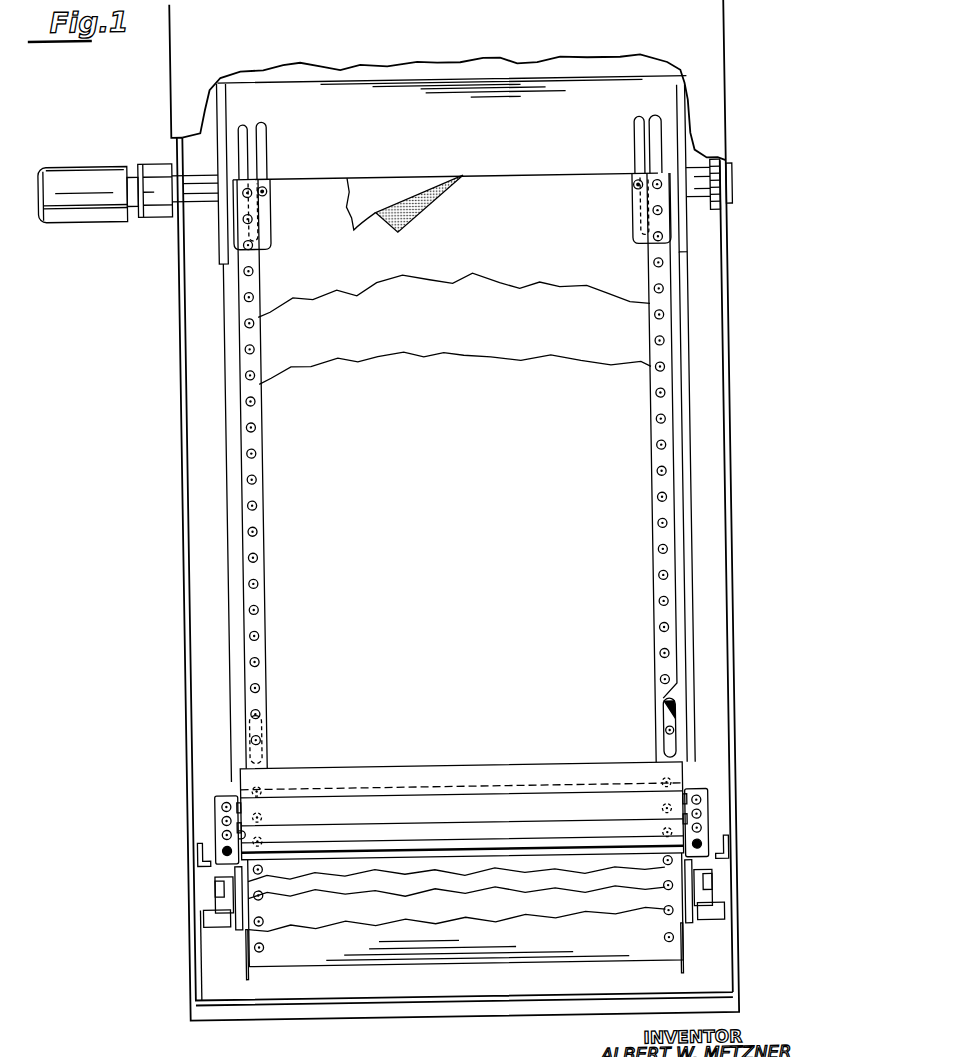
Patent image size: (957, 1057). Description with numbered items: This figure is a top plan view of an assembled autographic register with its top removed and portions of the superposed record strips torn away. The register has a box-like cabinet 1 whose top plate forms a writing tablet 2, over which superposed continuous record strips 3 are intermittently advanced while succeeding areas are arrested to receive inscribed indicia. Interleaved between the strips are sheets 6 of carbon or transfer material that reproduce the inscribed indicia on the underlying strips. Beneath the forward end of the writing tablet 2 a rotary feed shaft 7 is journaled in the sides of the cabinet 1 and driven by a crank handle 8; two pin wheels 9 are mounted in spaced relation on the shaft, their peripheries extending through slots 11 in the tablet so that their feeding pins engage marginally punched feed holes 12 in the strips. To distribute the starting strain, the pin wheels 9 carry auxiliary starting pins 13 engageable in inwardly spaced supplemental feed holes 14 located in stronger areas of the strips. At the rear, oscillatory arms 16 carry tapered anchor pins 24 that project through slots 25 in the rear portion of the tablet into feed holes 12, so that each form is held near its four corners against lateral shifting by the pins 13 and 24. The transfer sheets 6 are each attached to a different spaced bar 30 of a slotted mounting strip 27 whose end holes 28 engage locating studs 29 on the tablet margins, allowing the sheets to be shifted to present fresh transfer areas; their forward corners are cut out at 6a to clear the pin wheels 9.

The box-like cabinet 1 is at (203, 498).
The writing tablet 2 is at (228, 564).
The record strips 3 is at (242, 611).
The sheets of carbon or transfer material 6 is at (412, 212).
The cut-out forward corners 6a is at (282, 240).
The rotary feed shaft 7 is at (204, 203).
The crank handle 8 is at (72, 214).
The pin wheels 9 is at (225, 251).
The slots in the writing tablet 11 is at (269, 154).
The feed holes 12 is at (250, 656).
The auxiliary starting pins 13 is at (271, 194).
The supplemental feed holes 14 is at (272, 186).
The oscillatory arms 16 is at (672, 715).
The tapered anchor pins 24 is at (254, 736).
The slots in the rear portion of the writing tablet 25 is at (672, 703).
The slotted mounting strip 27 is at (221, 791).
The aligned spaced holes 28 is at (221, 805).
The locating studs 29 is at (223, 849).
The spaced bars 30 is at (223, 832).